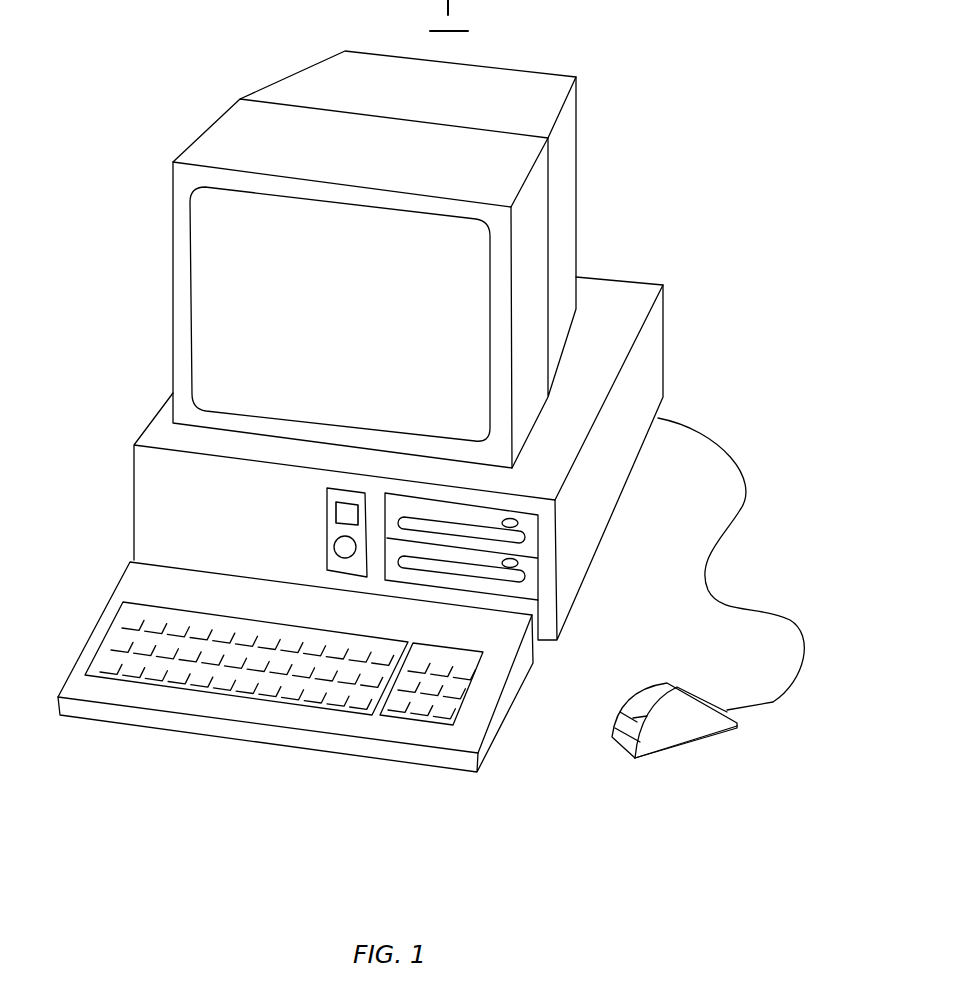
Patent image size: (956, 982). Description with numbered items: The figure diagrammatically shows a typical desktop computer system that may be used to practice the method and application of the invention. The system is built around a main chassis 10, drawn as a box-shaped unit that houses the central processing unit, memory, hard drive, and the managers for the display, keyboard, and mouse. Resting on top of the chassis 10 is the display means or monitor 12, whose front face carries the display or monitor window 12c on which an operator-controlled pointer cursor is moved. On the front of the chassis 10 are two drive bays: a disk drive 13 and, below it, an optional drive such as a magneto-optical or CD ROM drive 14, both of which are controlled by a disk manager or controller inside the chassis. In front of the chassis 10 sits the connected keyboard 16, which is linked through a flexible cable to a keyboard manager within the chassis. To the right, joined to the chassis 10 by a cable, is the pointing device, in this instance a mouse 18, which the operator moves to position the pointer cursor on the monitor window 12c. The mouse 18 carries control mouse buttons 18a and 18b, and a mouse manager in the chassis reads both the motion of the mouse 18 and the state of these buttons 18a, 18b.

The main chassis 10 is at (667, 338).
The monitor 12 is at (563, 197).
The monitor window 12c is at (210, 340).
The disk drive 13 is at (530, 527).
The CD ROM drive 14 is at (528, 590).
The keyboard 16 is at (130, 582).
The mouse 18 is at (700, 740).
The mouse button 18a is at (647, 698).
The mouse button 18b is at (630, 743).